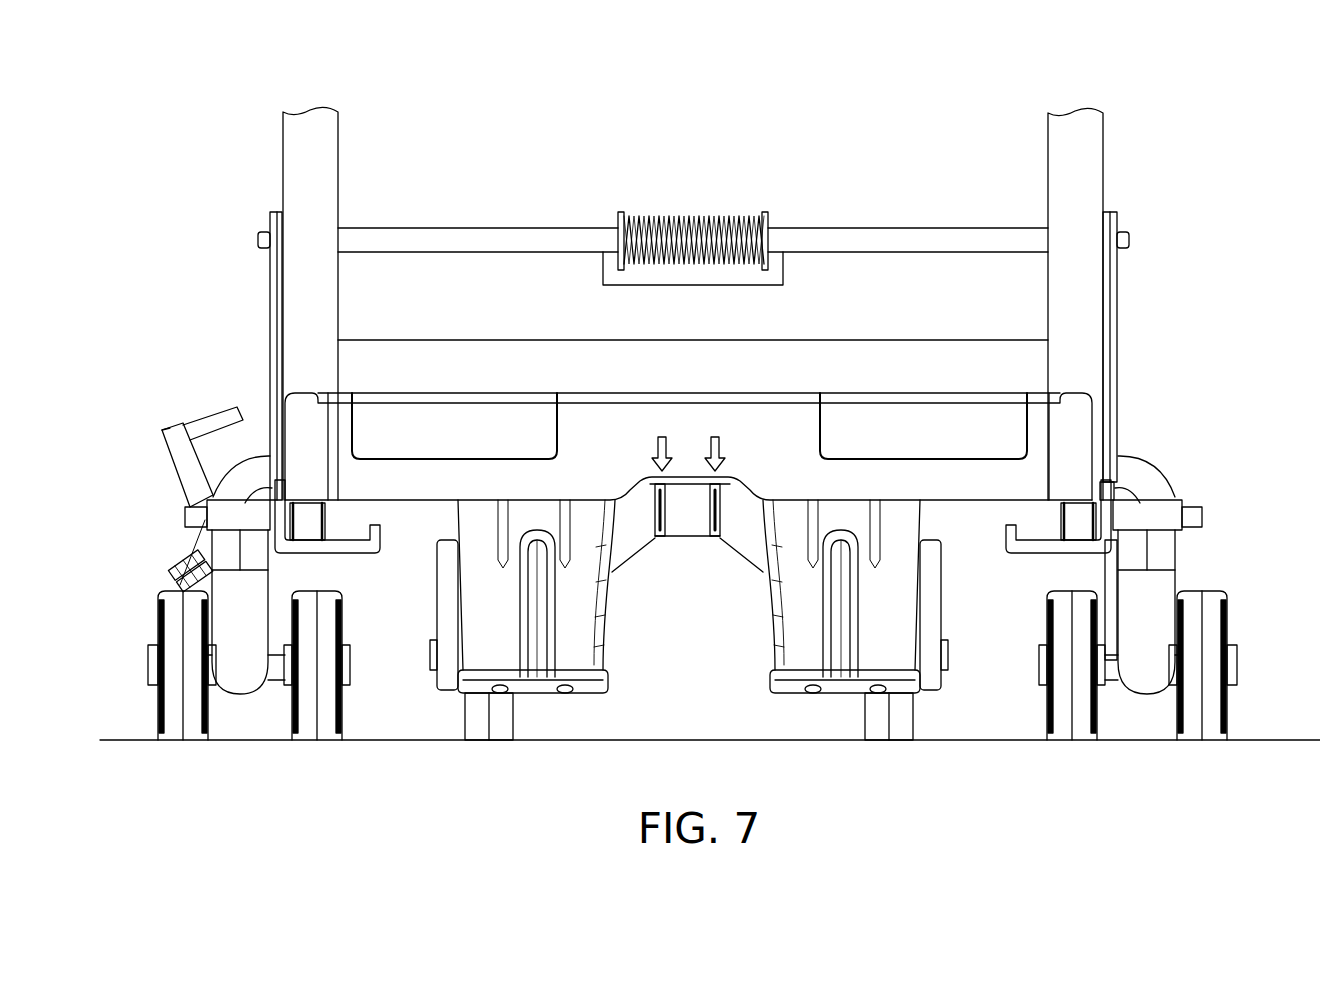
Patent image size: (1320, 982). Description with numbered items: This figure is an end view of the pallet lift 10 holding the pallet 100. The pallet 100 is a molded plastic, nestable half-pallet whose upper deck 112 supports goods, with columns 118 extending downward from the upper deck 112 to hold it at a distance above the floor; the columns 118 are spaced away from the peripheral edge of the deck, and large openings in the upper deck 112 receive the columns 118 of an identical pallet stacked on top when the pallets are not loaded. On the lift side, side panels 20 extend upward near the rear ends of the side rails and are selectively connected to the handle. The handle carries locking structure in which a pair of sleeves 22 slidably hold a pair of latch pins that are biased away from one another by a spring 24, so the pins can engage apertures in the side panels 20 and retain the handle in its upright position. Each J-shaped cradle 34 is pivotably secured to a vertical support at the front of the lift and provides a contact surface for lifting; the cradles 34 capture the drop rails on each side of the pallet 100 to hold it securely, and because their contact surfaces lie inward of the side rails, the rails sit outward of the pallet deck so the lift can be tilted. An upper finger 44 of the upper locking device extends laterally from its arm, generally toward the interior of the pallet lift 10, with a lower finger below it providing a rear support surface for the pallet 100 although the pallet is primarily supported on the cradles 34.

The pallet lift 10 is at (1103, 170).
The side panels 20 is at (268, 305).
The sleeves 22 is at (497, 228).
The spring 24 is at (603, 283).
The J-shaped cradle 34 is at (355, 553).
The upper finger 44 is at (212, 413).
The pallet 100 is at (456, 395).
The upper deck 112 is at (790, 393).
The columns 118 is at (610, 663).